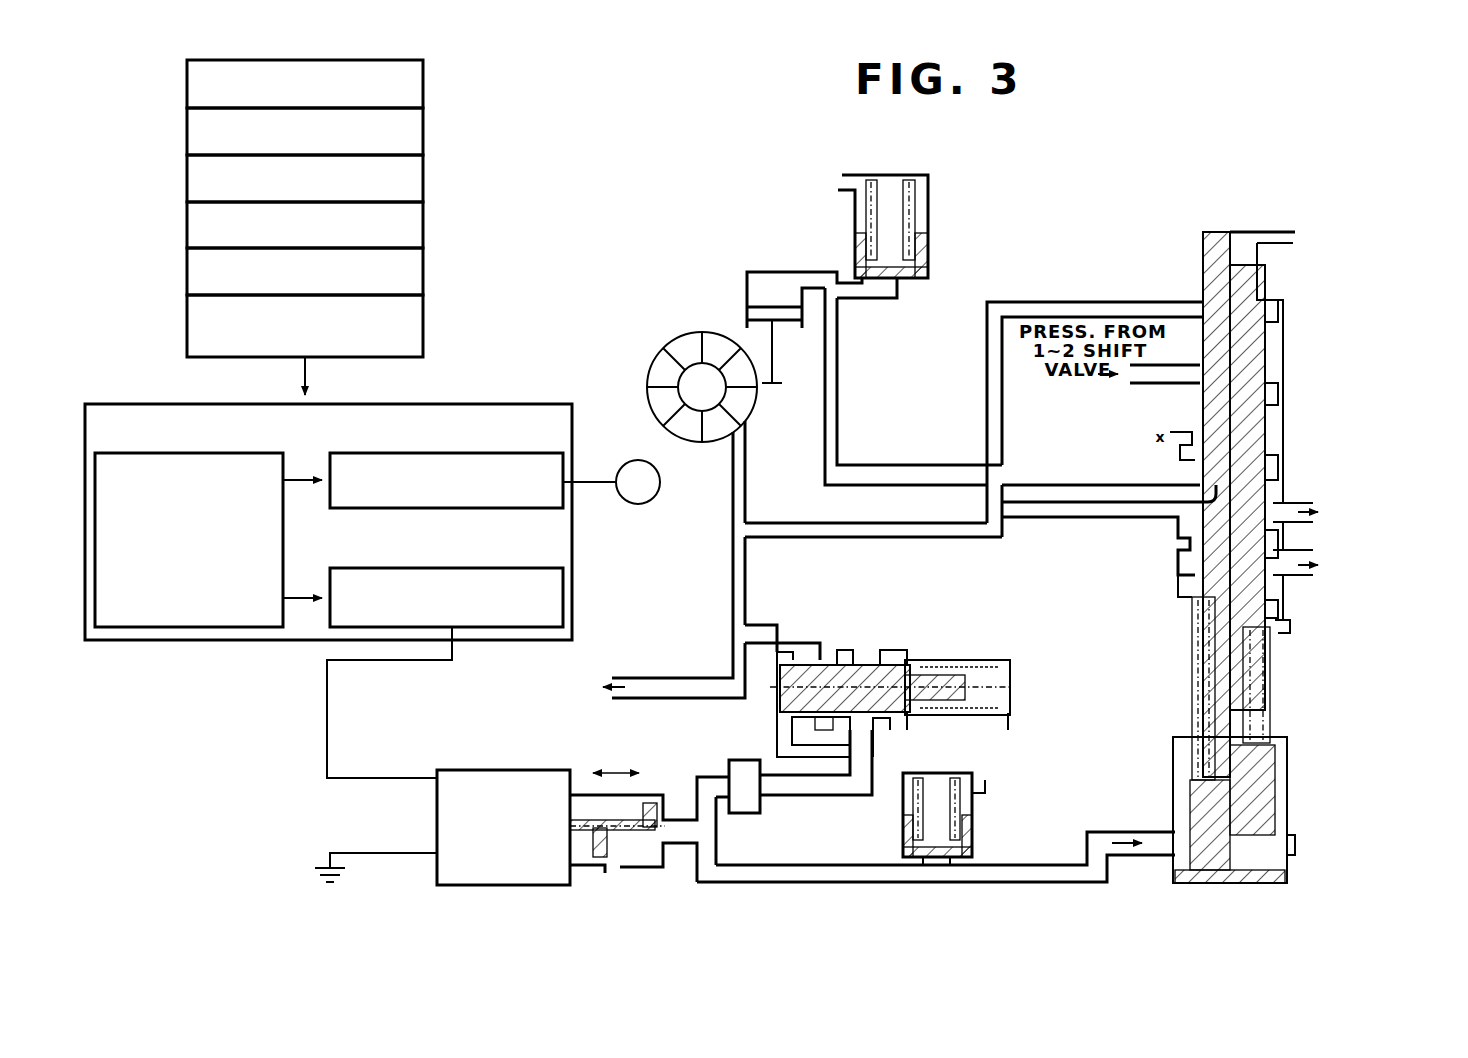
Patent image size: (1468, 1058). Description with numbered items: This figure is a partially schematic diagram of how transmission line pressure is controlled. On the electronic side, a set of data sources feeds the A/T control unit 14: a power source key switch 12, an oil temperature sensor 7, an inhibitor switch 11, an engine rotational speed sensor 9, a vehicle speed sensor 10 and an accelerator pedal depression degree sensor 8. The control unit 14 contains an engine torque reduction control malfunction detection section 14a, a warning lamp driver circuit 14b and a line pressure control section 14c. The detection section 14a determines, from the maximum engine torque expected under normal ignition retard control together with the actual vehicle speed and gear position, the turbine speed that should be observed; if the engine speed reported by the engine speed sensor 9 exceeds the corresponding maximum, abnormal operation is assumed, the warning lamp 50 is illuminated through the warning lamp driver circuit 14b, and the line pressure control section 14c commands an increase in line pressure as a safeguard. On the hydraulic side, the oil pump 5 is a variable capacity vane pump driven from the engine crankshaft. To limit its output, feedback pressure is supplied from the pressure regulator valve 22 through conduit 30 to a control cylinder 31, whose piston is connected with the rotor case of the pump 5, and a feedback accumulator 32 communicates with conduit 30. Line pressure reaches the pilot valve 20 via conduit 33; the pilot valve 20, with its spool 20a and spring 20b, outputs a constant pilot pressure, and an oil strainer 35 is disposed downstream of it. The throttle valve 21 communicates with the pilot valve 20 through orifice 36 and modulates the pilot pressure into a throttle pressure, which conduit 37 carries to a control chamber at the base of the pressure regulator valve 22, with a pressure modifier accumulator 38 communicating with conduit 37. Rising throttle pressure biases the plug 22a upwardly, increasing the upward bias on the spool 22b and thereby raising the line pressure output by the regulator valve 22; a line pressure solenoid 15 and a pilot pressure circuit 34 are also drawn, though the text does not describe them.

The power source key switch 12 is at (425, 90).
The oil temperature sensor 7 is at (425, 135).
The inhibitor switch 11 is at (425, 181).
The engine rotational speed sensor 9 is at (425, 226).
The vehicle speed sensor 10 is at (425, 270).
The accelerator pedal depression degree sensor 8 is at (425, 316).
The A/T control unit 14 is at (354, 523).
The engine torque reduction control malfunction detection section 14a is at (157, 628).
The warning lamp driver circuit 14b is at (555, 453).
The line pressure control section 14c is at (462, 568).
The warning lamp 50 is at (657, 492).
The oil pump 5 is at (668, 348).
The control cylinder 31 is at (758, 306).
The feedback accumulator 32 is at (930, 218).
The feedback pressure conduit 30 is at (872, 466).
The conduit 33 is at (745, 582).
The pressure regulator valve 22 is at (1319, 531).
The plug 22a is at (1258, 772).
The spool 22b is at (1265, 360).
The pilot valve 20 is at (901, 667).
The spool 20a is at (882, 660).
The spring 20b is at (978, 658).
The orifice 36 is at (705, 805).
The pilot pressure circuit 34 is at (780, 782).
The oil strainer 35 is at (742, 813).
The line pressure solenoid 15 is at (437, 790).
The throttle valve 21 is at (676, 872).
The conduit 37 is at (1028, 868).
The pressure modifier accumulator 38 is at (970, 840).